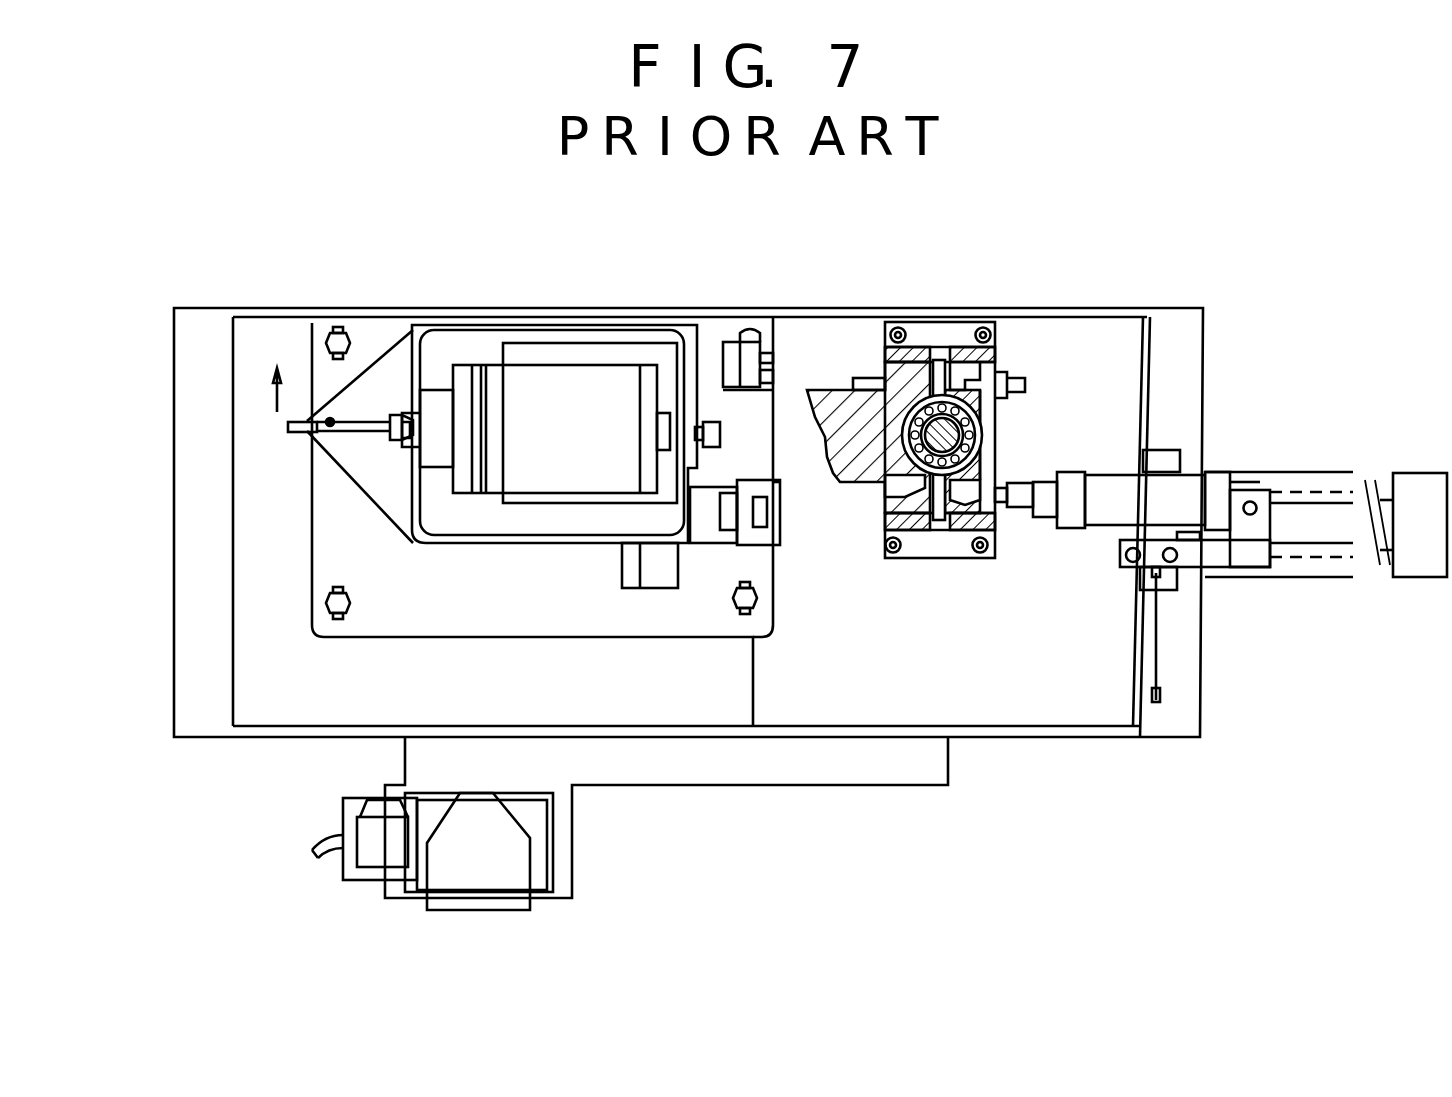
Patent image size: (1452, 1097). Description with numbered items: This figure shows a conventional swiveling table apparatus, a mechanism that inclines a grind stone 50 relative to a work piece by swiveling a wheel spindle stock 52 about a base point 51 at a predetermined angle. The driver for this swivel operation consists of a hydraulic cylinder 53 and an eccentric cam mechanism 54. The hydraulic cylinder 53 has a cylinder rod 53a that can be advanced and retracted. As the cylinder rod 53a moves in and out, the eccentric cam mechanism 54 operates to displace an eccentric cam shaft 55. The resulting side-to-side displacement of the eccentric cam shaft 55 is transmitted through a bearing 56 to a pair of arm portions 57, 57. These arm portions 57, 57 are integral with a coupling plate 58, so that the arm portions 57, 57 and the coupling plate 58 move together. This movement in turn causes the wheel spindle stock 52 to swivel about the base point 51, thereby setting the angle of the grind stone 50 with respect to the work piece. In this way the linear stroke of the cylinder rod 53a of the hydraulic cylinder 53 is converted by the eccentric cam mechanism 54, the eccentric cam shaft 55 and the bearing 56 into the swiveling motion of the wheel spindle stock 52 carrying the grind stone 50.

The grind stone 50 is at (293, 433).
The base point 51 is at (323, 434).
The wheel spindle stock 52 is at (410, 340).
The hydraulic cylinder 53 is at (1100, 518).
The cylinder rod 53a is at (1048, 482).
The eccentric cam mechanism 54 is at (925, 316).
The eccentric cam shaft 55 is at (953, 438).
The bearing 56 is at (863, 485).
The arm portions 57 is at (1005, 347).
The coupling plate 58 is at (796, 405).